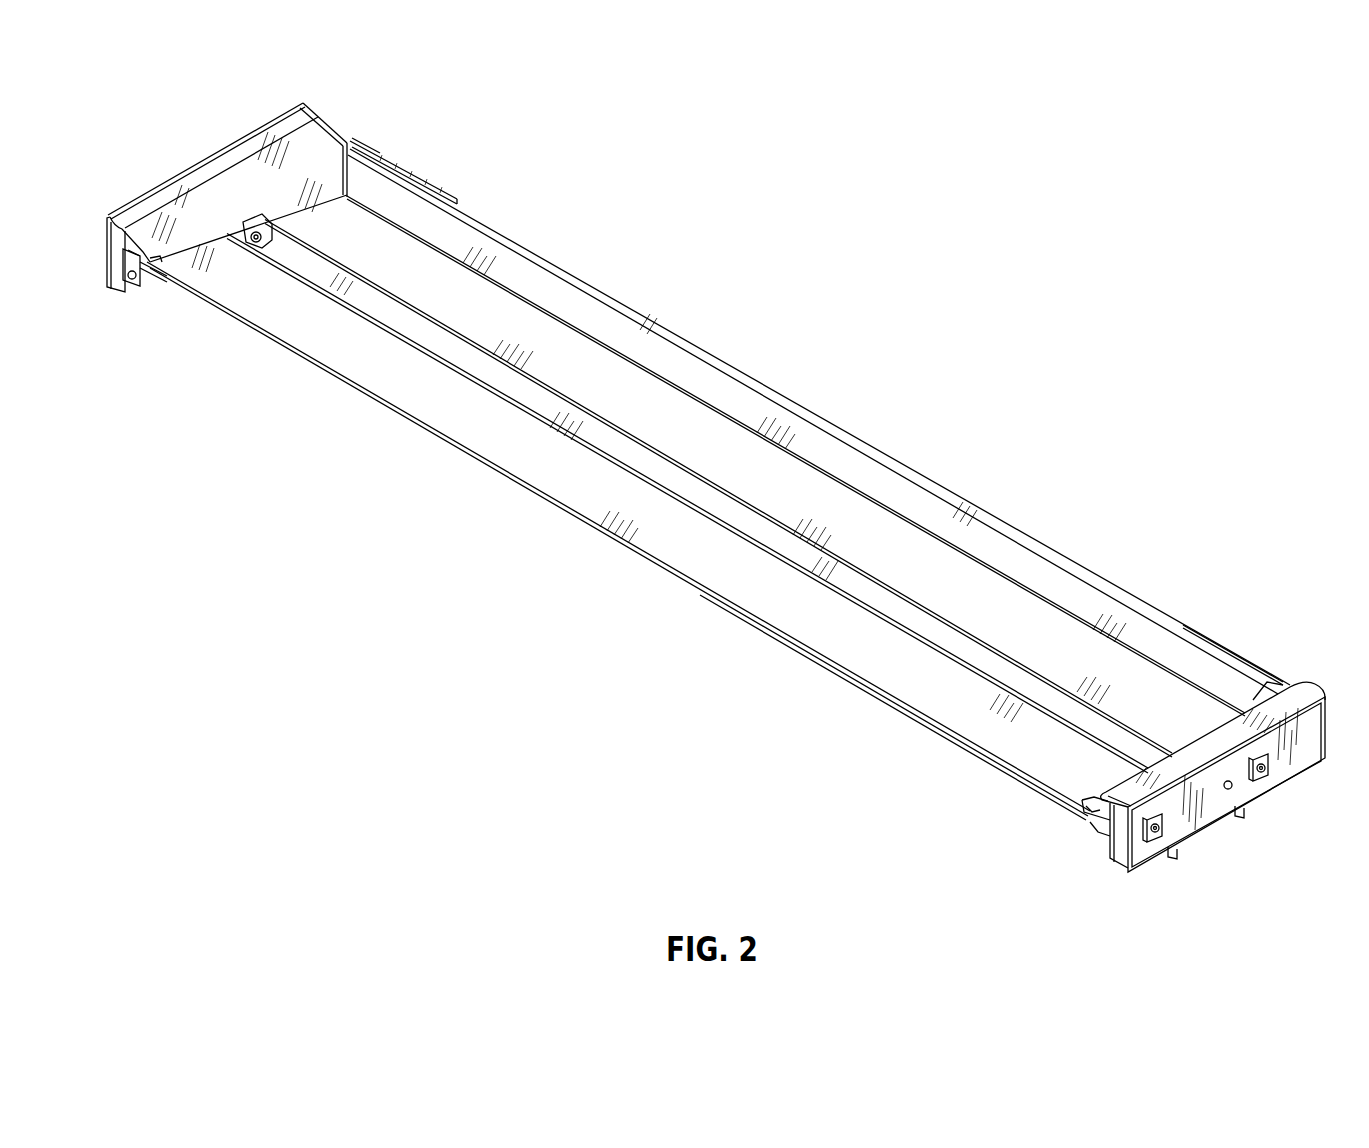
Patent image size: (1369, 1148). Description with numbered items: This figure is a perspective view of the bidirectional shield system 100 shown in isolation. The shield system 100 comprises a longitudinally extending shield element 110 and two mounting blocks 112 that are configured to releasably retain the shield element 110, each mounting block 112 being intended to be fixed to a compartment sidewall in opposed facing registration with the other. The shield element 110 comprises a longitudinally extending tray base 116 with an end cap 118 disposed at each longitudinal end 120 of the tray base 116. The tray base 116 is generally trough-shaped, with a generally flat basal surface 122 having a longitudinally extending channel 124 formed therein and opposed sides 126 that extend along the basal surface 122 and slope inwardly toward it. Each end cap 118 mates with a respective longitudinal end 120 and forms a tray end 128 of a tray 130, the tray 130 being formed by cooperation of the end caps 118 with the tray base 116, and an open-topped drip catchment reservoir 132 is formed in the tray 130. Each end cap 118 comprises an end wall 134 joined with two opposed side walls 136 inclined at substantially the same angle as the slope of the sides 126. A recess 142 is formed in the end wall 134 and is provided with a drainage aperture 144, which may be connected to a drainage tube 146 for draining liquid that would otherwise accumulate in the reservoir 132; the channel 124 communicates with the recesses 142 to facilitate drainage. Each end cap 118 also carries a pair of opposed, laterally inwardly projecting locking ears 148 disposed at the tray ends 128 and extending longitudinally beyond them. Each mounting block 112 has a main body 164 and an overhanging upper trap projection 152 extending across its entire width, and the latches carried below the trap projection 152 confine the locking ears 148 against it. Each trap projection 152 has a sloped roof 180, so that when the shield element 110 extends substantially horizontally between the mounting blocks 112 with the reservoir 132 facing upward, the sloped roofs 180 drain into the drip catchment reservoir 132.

The bidirectional shield system 100 is at (398, 593).
The shield element 110 is at (718, 447).
The mounting block 112 is at (698, 494).
The tray base 116 is at (812, 435).
The end cap 118 is at (362, 155).
The longitudinal end 120 is at (331, 186).
The basal surface 122 is at (718, 489).
The longitudinally extending channel 124 is at (772, 533).
The side 126 is at (617, 332).
The tray end 128 is at (183, 226).
The tray 130 is at (557, 256).
The drip catchment reservoir 132 is at (910, 541).
The end wall 134 is at (292, 193).
The side wall 136 is at (363, 162).
The recess 142 is at (247, 202).
The drainage aperture 144 is at (245, 256).
The drainage tube 146 is at (1238, 812).
The locking ear 148 is at (130, 286).
The trap projection 152 is at (155, 276).
The main body 164 is at (112, 230).
The sloped roof 180 is at (230, 215).